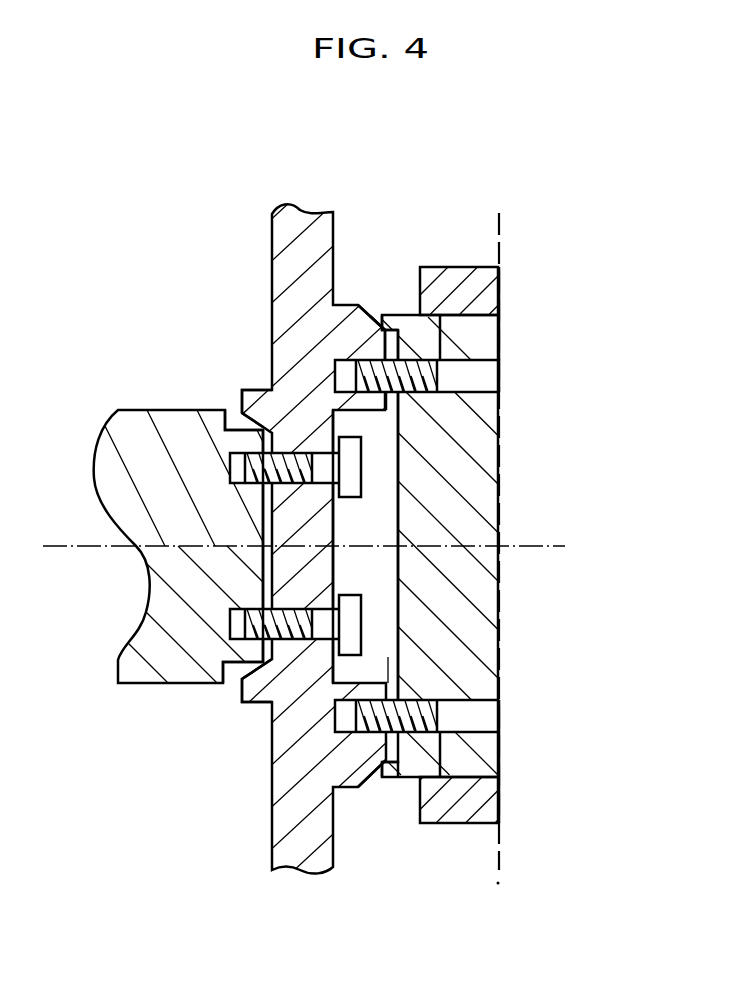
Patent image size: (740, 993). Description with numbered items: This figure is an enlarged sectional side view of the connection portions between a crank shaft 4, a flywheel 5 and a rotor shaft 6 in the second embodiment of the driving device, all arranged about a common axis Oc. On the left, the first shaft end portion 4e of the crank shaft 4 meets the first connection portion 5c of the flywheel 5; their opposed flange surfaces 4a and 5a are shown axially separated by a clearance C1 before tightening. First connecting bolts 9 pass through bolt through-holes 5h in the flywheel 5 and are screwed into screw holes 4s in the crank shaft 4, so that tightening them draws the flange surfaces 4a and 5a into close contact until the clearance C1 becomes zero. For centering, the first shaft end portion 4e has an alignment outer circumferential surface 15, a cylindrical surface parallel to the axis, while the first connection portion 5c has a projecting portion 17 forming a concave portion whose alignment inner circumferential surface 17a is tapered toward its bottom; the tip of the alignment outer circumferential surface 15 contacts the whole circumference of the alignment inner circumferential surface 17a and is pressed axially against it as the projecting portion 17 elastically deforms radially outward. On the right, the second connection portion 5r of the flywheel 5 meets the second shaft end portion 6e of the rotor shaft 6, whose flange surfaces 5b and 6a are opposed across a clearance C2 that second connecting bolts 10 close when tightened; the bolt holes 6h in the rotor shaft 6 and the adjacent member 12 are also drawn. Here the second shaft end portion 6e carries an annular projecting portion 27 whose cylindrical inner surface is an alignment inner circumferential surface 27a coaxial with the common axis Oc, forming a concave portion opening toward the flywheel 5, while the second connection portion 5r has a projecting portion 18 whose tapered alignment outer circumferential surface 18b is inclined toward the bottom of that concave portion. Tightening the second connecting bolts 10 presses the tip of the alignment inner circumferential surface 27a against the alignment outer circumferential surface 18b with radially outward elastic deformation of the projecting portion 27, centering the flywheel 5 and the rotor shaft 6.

The crank shaft 4 is at (100, 458).
The flange surface 4a is at (263, 513).
The first shaft end portion 4e is at (235, 413).
The screw holes 4s is at (240, 455).
The flywheel 5 is at (302, 862).
The flange surface 5a is at (333, 545).
The flange surface 5b is at (404, 396).
The first connection portion 5c is at (245, 390).
The bolt through-holes 5h is at (337, 488).
The second connection portion 5r is at (388, 312).
The rotor shaft 6 is at (455, 780).
The flange surface 6a is at (388, 345).
The second shaft end portion 6e is at (393, 788).
The holder bolt hole 6h is at (468, 378).
The first connecting bolts 9 is at (403, 472).
The second connecting bolts 10 is at (470, 357).
The cover member 12 is at (476, 268).
The alignment outer circumferential surface 15 is at (245, 661).
The projecting portion 17 is at (250, 695).
The alignment inner circumferential surface 17a is at (240, 425).
The projecting portion 18 is at (368, 790).
The alignment outer circumferential surface 18b is at (381, 318).
The projecting portion 27 is at (399, 314).
The alignment inner circumferential surface 27a is at (376, 777).
The clearance C1 is at (278, 592).
The clearance C2 is at (357, 670).
The common axis Oc is at (325, 548).